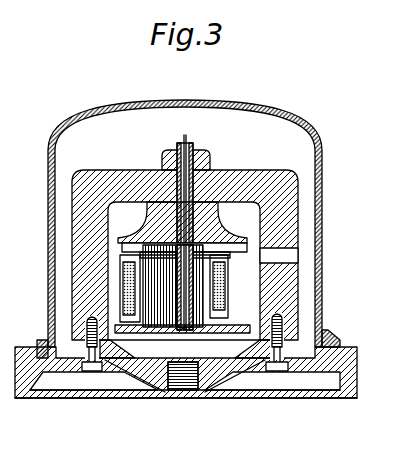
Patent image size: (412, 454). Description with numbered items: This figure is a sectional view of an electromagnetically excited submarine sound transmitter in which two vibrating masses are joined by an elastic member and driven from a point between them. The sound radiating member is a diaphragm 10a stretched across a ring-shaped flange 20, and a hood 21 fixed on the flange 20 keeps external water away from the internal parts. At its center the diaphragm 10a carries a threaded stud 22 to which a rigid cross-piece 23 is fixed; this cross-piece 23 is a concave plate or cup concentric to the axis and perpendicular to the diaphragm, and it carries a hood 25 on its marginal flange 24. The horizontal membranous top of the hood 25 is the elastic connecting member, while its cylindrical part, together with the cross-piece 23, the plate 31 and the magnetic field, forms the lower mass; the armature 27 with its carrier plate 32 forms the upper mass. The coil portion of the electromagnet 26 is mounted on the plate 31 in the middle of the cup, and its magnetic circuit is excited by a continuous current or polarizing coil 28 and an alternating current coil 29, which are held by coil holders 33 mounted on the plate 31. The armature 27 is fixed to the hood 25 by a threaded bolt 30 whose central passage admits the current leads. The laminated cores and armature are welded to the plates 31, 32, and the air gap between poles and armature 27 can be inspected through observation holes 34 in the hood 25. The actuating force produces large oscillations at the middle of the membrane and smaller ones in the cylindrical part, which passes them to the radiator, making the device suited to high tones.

The diaphragm 10a is at (228, 395).
The ring-shaped flange 20 is at (345, 397).
The hood 21 is at (318, 310).
The threaded stud 22 is at (186, 392).
The rigid cross-piece 23 is at (135, 374).
The marginal flange 24 is at (292, 372).
The hood 25 is at (284, 185).
The electromagnet 26 is at (233, 265).
The armature 27 is at (234, 250).
The polarizing coil 28 is at (121, 293).
The alternating current coil 29 is at (123, 282).
The threaded bolt 30 is at (176, 180).
The plate 31 is at (252, 370).
The carrier plate 32 is at (240, 228).
The coil holders 33 is at (82, 317).
The observation holes 34 is at (288, 257).